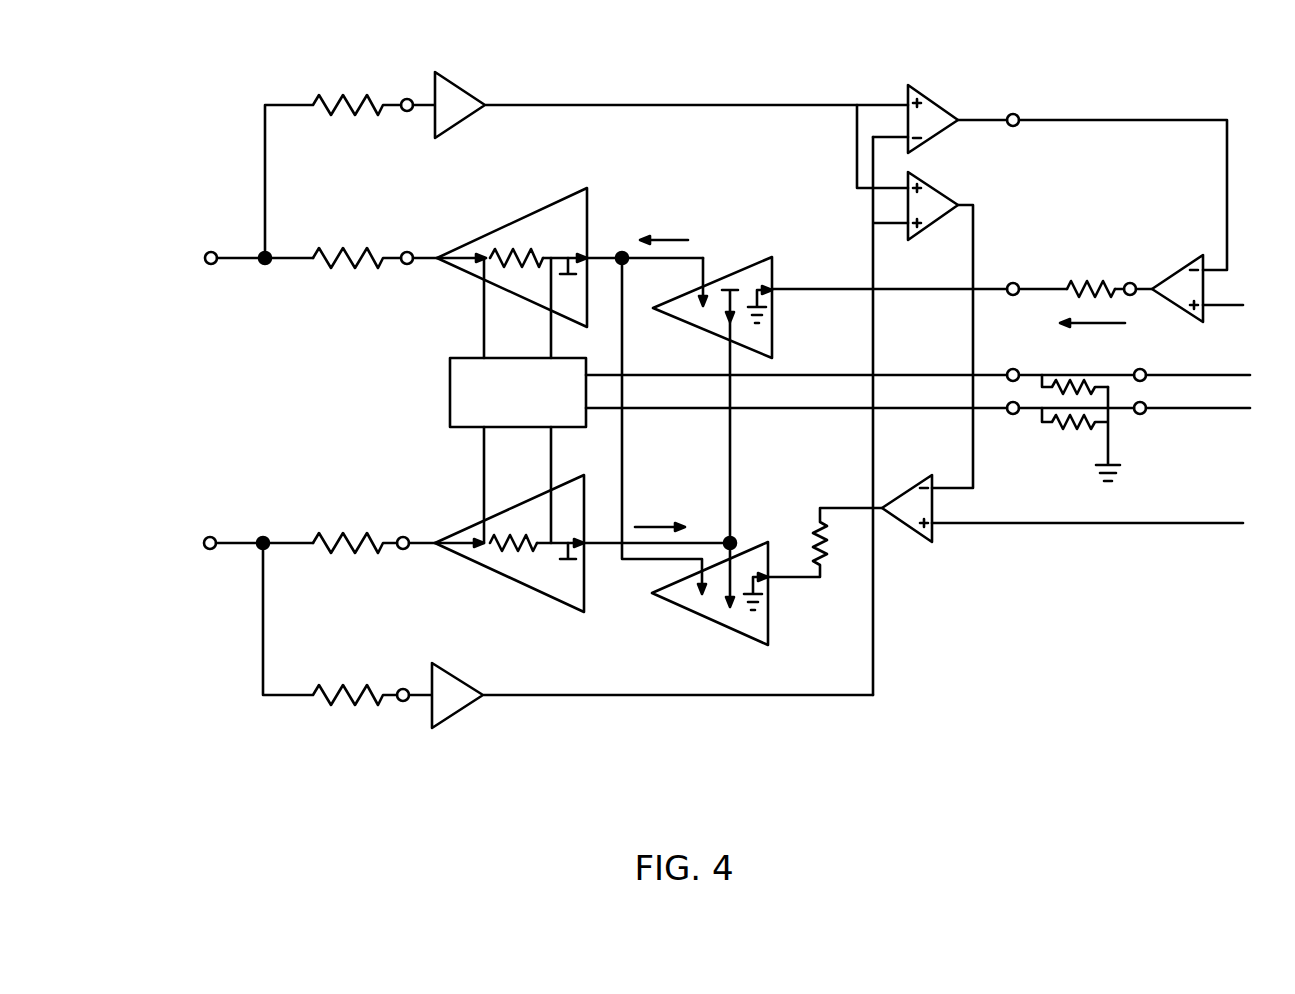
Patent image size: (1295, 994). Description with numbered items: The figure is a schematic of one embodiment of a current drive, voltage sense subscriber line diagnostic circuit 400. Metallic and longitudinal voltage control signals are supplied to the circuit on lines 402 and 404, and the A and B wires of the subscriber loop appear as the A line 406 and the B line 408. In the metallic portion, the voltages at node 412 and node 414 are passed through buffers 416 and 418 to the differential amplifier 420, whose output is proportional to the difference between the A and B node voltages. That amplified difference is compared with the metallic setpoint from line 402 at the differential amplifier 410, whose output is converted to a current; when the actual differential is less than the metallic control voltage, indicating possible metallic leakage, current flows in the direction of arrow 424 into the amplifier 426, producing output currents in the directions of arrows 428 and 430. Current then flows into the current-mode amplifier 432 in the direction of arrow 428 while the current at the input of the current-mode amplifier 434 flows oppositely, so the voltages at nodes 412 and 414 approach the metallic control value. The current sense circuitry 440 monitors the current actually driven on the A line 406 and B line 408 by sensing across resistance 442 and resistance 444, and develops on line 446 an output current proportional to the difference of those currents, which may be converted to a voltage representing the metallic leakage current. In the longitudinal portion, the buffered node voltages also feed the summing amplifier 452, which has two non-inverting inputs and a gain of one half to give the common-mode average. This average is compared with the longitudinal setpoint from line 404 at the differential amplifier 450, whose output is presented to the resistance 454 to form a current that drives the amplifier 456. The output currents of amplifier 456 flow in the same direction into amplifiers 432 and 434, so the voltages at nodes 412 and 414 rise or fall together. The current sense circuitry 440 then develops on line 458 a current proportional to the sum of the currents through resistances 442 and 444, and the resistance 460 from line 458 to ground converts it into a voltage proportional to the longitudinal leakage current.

The current drive voltage sense subscriber line diagnostic circuit 400 is at (770, 70).
The line 402 is at (1224, 306).
The line 404 is at (1187, 526).
The A line 406 is at (207, 264).
The B line 408 is at (234, 552).
The differential amplifier 410 is at (1164, 281).
The node 412 is at (270, 264).
The node 414 is at (268, 536).
The buffer 416 is at (472, 101).
The buffer 418 is at (457, 708).
The differential amplifier 420 is at (954, 116).
The arrow 424 is at (1096, 324).
The amplifier 426 is at (760, 268).
The arrow 428 is at (688, 240).
The arrow 430 is at (654, 515).
The current-mode amplifier 432 is at (527, 221).
The current-mode amplifier 434 is at (478, 572).
The current sense circuitry 440 is at (450, 381).
The resistance 442 is at (535, 250).
The resistance 444 is at (530, 546).
The line 446 is at (687, 374).
The differential amplifier 450 is at (910, 528).
The summing amplifier 452 is at (958, 202).
The resistance 454 is at (815, 528).
The amplifier 456 is at (768, 625).
The line 458 is at (689, 408).
The resistance 460 is at (1070, 428).